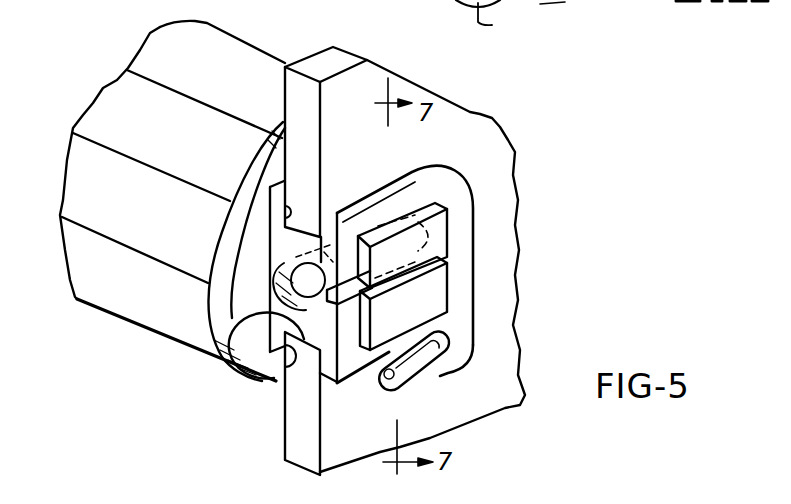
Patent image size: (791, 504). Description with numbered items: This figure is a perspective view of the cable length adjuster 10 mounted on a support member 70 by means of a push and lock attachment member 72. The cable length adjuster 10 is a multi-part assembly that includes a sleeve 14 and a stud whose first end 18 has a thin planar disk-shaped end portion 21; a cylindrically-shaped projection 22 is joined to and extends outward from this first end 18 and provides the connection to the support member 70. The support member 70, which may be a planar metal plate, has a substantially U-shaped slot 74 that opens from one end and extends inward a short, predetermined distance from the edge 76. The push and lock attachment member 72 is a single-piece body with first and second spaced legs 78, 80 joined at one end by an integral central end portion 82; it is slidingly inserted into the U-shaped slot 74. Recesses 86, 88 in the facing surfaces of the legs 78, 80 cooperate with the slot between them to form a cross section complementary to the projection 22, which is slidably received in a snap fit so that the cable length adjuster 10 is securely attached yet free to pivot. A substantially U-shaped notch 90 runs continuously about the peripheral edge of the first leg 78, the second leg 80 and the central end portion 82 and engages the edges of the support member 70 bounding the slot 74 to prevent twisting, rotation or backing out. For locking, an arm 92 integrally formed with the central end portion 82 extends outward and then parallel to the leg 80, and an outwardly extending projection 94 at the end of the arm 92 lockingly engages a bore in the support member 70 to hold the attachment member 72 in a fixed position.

The cable length adjuster 10 is at (75, 96).
The sleeve 14 is at (159, 57).
The first end 18 is at (510, 19).
The disk-shaped end portion 21 is at (247, 340).
The projection 22 is at (470, 238).
The support member 70 is at (507, 345).
The push and lock attachment member 72 is at (472, 178).
The U-shaped slot 74 is at (207, 327).
The edge 76 is at (297, 440).
The first leg 78 is at (411, 337).
The second leg 80 is at (358, 218).
The central end portion 82 is at (467, 201).
The recess 86 is at (272, 291).
The recess 88 is at (289, 272).
The U-shaped notch 90 is at (289, 205).
The arm 92 is at (443, 373).
The projection 94 is at (382, 384).